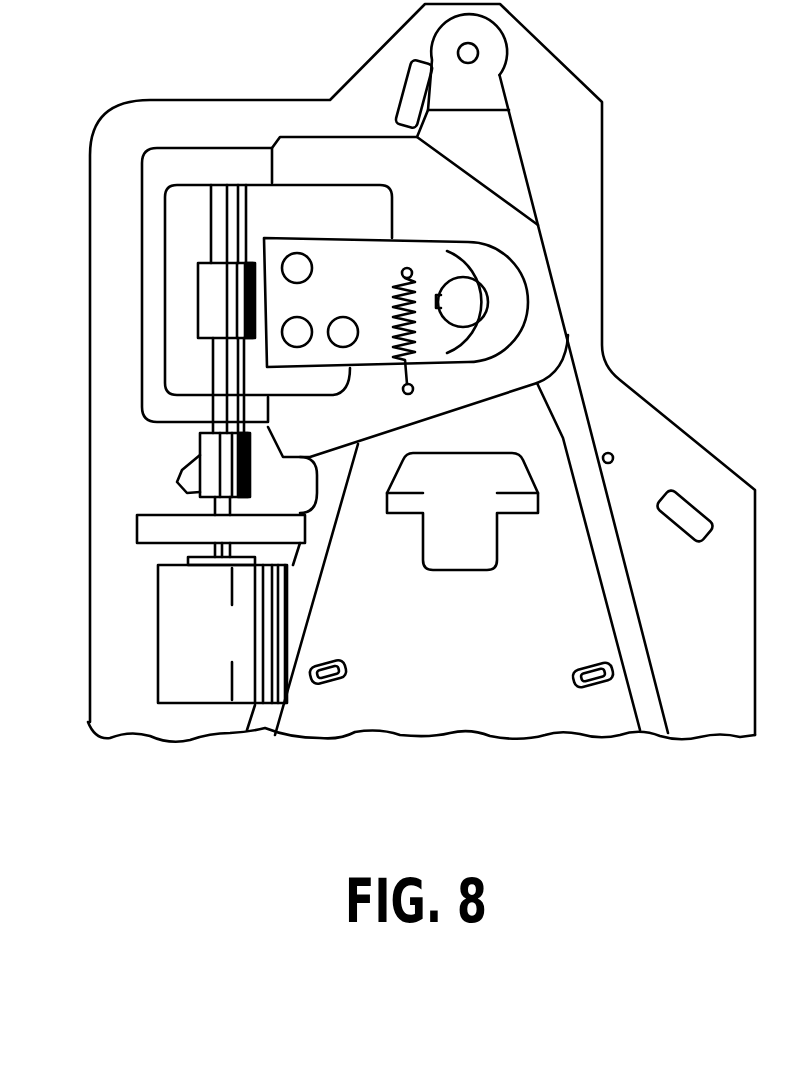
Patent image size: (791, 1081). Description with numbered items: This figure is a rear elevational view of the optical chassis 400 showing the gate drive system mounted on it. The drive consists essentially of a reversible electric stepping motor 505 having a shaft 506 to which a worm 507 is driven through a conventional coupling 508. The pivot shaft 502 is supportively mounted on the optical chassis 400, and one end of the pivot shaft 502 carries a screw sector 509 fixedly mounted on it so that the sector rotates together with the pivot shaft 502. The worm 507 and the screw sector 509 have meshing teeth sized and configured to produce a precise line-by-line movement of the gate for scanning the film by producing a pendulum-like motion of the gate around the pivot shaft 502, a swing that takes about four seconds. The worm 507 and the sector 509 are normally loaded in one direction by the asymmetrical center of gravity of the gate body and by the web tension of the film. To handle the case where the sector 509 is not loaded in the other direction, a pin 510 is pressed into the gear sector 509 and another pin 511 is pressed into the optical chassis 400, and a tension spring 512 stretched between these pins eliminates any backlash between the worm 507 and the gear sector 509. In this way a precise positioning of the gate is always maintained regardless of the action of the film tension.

The optical chassis 400 is at (578, 219).
The pivot shaft 502 is at (470, 297).
The reversible electric stepping motor 505 is at (230, 645).
The shaft 506 is at (222, 207).
The worm 507 is at (200, 298).
The coupling 508 is at (200, 452).
The screw sector 509 is at (427, 247).
The pin 510 is at (403, 272).
The pin 511 is at (412, 393).
The tension spring 512 is at (396, 320).